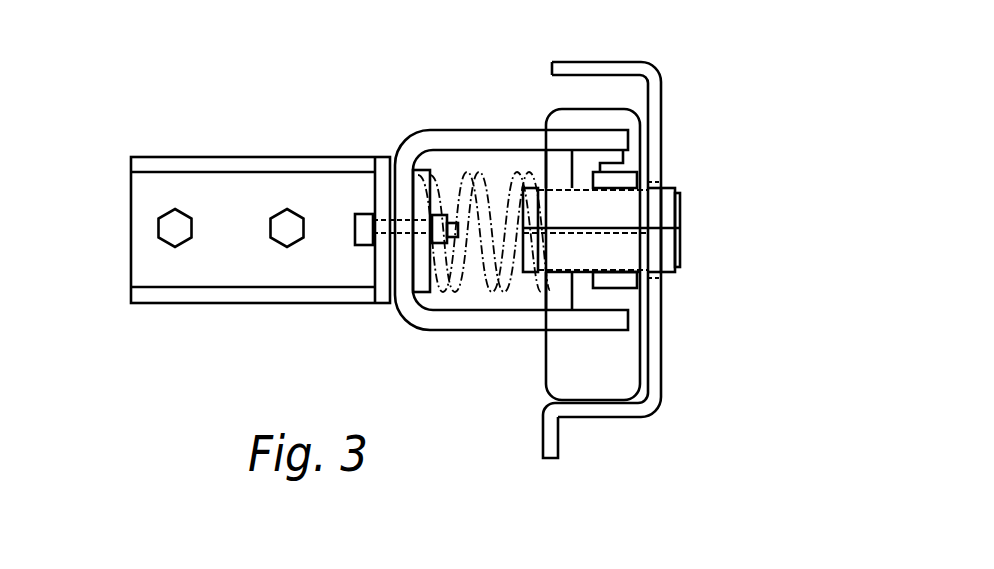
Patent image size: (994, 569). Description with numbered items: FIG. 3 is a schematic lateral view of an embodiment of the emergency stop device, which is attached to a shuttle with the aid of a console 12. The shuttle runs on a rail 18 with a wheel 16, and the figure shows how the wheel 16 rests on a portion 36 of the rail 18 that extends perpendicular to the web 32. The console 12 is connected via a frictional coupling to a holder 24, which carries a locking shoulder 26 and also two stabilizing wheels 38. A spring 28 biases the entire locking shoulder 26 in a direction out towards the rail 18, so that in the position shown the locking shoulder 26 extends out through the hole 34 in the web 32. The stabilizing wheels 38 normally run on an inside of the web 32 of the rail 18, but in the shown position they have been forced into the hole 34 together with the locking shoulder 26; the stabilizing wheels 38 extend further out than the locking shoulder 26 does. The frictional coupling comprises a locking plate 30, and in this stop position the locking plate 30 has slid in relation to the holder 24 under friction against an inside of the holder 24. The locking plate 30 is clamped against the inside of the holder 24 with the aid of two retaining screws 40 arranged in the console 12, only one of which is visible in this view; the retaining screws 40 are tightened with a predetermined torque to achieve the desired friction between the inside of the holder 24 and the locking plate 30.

The console 12 is at (320, 178).
The wheel 16 is at (623, 387).
The rail 18 is at (663, 269).
The holder 24 is at (480, 142).
The locking shoulder 26 is at (663, 196).
The spring 28 is at (497, 293).
The locking plate 30 is at (420, 283).
The web 32 is at (655, 343).
The hole 34 is at (648, 273).
The portion of the rail 36 is at (597, 412).
The stabilizing wheels 38 is at (680, 215).
The retaining screws 40 is at (363, 216).